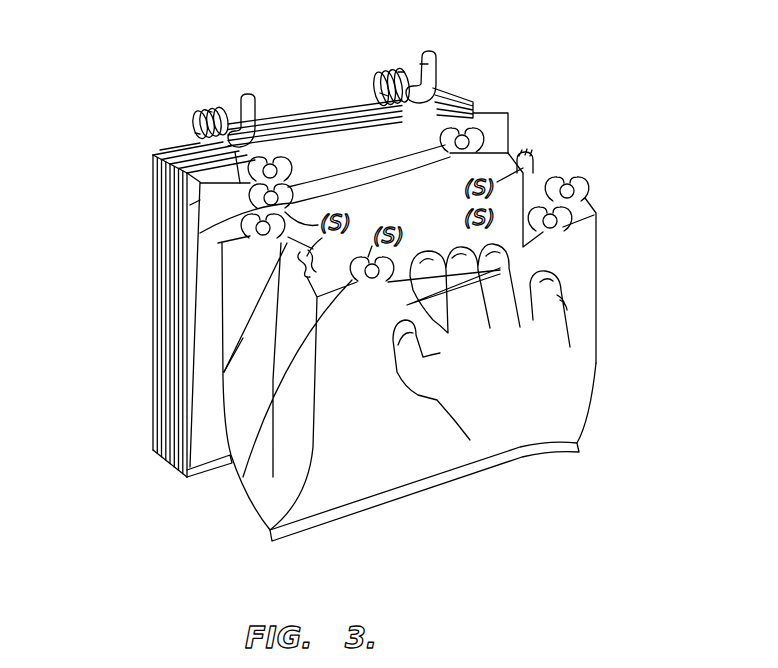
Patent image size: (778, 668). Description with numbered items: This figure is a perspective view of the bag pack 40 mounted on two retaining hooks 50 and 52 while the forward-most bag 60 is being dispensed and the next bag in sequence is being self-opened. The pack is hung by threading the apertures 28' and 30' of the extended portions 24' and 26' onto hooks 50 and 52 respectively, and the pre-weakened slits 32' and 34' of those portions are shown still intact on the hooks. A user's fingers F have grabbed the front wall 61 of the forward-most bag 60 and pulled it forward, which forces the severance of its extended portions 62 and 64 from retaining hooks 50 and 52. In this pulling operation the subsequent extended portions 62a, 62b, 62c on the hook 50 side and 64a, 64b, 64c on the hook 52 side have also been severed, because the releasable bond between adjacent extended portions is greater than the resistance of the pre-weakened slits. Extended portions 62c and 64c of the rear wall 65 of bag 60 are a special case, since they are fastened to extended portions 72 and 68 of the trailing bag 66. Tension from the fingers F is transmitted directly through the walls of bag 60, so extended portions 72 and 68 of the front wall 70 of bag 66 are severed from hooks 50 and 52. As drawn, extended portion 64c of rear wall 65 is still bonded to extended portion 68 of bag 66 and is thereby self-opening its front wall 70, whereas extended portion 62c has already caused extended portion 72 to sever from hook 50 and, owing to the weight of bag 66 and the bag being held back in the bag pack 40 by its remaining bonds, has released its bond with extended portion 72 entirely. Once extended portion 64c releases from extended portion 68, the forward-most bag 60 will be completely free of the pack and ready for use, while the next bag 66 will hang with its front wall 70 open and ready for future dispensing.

The bag pack 40 is at (155, 246).
The trailing bag 66 is at (198, 202).
The extended portion 72 is at (163, 149).
The extended portion 24' is at (171, 116).
The pre-weakened slit 32' is at (172, 86).
The aperture 28' is at (131, 140).
The retaining hook 50 is at (245, 92).
The front wall 70 is at (337, 177).
The extended portion 26' is at (377, 61).
The aperture 30' is at (413, 36).
The pre-weakened slit 34' is at (450, 34).
The extended portion 68 is at (380, 93).
The retaining hook 52 is at (440, 61).
The rear wall 65 is at (444, 204).
The extended portion 64c is at (503, 128).
The extended portion 64b is at (507, 217).
The extended portion 64a is at (585, 182).
The extended portion 64 is at (553, 230).
The forward-most bag 60 is at (603, 235).
The front wall 61 is at (366, 362).
The extended portion 62 is at (245, 477).
The extended portion 62c is at (250, 237).
The extended portion 62b is at (242, 262).
The extended portion 62a is at (218, 375).
The user's fingers F is at (420, 303).